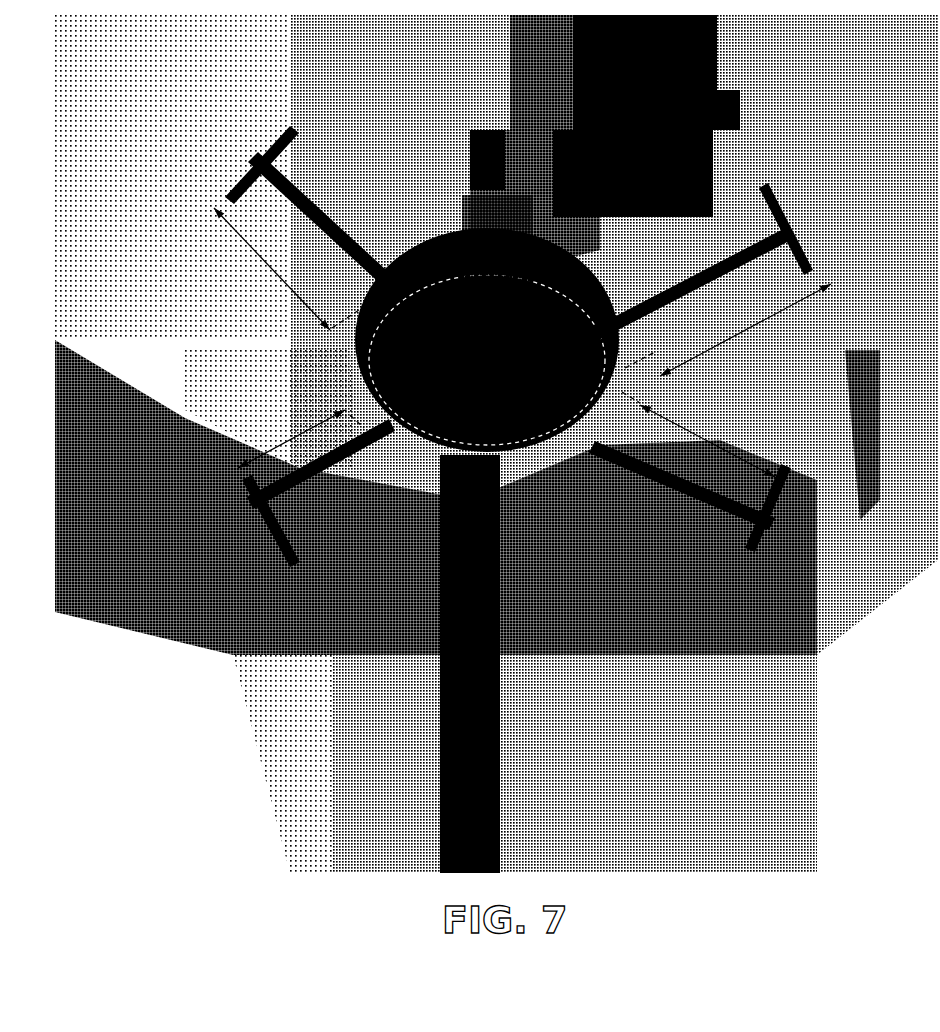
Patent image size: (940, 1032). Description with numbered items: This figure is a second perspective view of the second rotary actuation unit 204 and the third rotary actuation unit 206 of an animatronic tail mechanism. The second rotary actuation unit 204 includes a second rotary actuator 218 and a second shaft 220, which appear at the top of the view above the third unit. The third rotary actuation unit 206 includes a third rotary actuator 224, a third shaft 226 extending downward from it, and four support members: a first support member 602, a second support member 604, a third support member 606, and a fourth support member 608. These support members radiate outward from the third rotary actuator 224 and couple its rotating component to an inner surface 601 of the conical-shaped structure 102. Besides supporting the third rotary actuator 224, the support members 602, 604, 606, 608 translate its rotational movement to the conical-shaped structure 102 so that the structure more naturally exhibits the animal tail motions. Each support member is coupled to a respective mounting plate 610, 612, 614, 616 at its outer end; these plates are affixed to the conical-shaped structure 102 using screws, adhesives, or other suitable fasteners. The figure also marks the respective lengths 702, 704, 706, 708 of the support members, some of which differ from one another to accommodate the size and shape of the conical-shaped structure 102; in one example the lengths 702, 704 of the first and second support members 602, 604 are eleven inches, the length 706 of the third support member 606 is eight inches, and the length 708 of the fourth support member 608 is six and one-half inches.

The conical-shaped structure 102 is at (263, 770).
The second rotary actuation unit 204 is at (385, 95).
The third rotary actuation unit 206 is at (153, 317).
The second rotary actuator 218 is at (717, 133).
The second shaft 220 is at (463, 217).
The third rotary actuator 224 is at (356, 372).
The third shaft 226 is at (447, 738).
The inner surface 601 is at (489, 357).
The first support member 602 is at (333, 230).
The second support member 604 is at (723, 263).
The third support member 606 is at (660, 493).
The fourth support member 608 is at (347, 493).
The mounting plate 610 is at (240, 167).
The mounting plate 612 is at (763, 200).
The mounting plate 614 is at (750, 500).
The mounting plate 616 is at (243, 510).
The length 702 is at (263, 267).
The length 704 is at (753, 330).
The length 706 is at (717, 440).
The length 708 is at (287, 440).